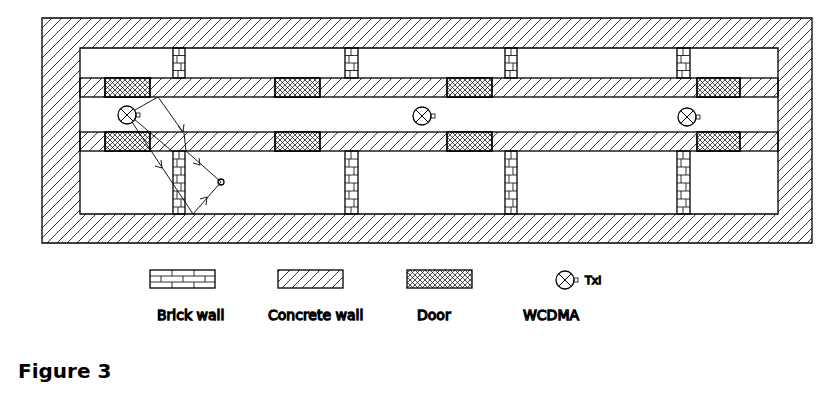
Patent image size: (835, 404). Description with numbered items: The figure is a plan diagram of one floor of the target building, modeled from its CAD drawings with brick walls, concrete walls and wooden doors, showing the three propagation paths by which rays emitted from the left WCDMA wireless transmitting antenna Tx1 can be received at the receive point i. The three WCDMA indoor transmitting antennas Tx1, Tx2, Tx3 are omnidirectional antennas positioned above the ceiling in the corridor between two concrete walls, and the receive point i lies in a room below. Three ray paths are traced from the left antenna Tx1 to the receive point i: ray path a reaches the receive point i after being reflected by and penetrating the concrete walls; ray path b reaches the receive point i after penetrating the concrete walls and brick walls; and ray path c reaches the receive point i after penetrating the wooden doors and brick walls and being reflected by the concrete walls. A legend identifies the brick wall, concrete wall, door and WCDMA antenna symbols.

The left WCDMA wireless transmitting antenna Tx1 is at (144, 115).
The WCDMA wireless transmitting antenna Tx2 is at (441, 116).
The WCDMA wireless transmitting antenna Tx3 is at (704, 117).
The ray path a is at (178, 139).
The ray path b is at (153, 135).
The ray path c is at (176, 168).
The receive point i is at (225, 184).